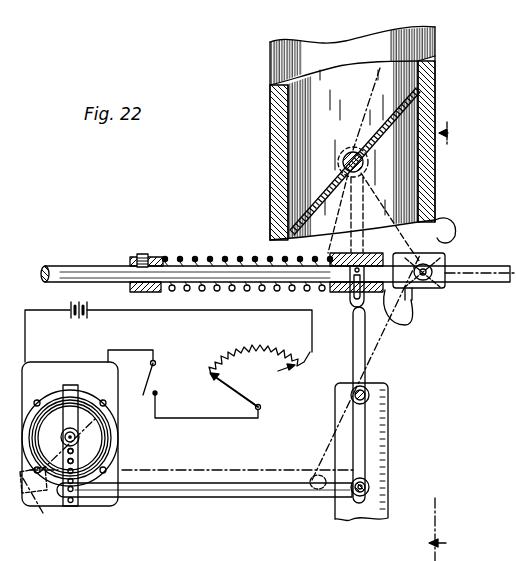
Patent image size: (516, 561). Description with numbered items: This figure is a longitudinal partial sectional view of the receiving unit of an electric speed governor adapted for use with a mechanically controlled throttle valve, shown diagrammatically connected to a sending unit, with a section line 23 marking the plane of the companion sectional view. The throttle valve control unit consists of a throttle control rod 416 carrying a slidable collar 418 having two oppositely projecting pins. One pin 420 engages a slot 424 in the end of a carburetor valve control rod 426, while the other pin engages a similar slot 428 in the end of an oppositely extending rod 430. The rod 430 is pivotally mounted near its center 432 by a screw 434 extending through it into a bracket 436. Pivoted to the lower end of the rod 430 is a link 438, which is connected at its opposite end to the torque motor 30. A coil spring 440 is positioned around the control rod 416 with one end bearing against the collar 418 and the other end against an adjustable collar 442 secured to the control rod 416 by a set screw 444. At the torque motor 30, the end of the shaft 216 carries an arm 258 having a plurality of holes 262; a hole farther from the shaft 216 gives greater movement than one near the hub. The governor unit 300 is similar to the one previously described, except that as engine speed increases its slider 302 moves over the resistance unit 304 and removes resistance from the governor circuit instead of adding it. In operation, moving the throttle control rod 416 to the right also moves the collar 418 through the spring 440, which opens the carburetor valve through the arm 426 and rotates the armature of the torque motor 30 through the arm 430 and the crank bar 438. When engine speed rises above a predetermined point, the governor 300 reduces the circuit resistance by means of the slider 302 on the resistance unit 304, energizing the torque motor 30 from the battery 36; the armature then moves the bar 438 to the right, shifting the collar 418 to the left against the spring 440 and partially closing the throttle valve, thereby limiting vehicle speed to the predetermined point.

The section line 23- 23 is at (451, 341).
The throttle control rod 416 is at (73, 265).
The adjustable collar 442 is at (137, 258).
The set screw 444 is at (157, 257).
The coil spring 440 is at (241, 257).
The carburetor valve control rod 426 is at (425, 218).
The slot 424 is at (428, 236).
The slot 428 is at (426, 255).
The slidable collar 418 is at (409, 292).
The pin 420 is at (357, 303).
The rod 430 is at (360, 364).
The center 432 is at (369, 398).
The screw 434 is at (368, 402).
The bracket 436 is at (382, 455).
The link 438 is at (218, 473).
The shaft 216 is at (80, 437).
The holes 262 is at (75, 461).
The arm 258 is at (70, 506).
The battery 36 is at (82, 322).
The torque motor 30 is at (88, 361).
The resistance unit 304 is at (287, 340).
The governor unit 300 is at (271, 374).
The slider 302 is at (260, 408).